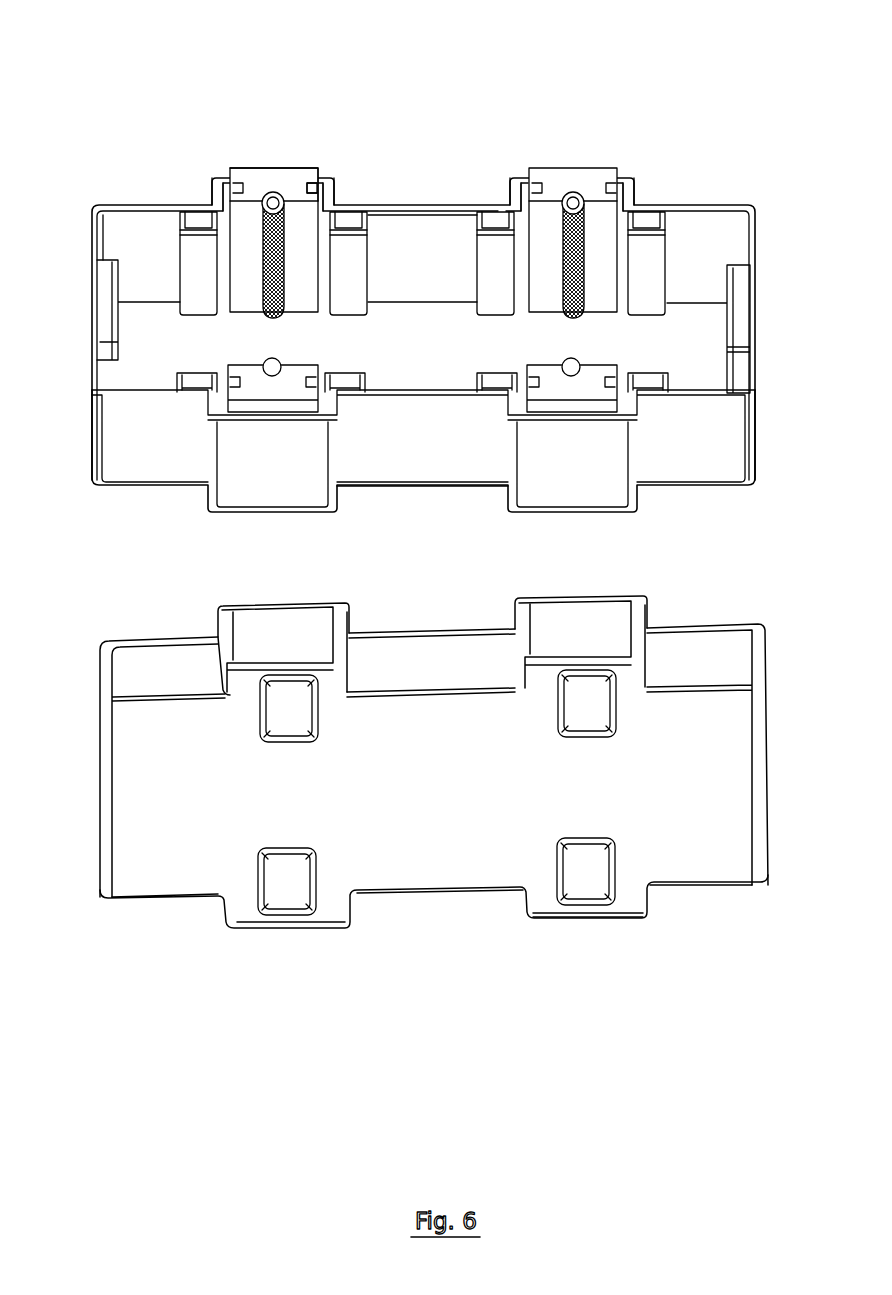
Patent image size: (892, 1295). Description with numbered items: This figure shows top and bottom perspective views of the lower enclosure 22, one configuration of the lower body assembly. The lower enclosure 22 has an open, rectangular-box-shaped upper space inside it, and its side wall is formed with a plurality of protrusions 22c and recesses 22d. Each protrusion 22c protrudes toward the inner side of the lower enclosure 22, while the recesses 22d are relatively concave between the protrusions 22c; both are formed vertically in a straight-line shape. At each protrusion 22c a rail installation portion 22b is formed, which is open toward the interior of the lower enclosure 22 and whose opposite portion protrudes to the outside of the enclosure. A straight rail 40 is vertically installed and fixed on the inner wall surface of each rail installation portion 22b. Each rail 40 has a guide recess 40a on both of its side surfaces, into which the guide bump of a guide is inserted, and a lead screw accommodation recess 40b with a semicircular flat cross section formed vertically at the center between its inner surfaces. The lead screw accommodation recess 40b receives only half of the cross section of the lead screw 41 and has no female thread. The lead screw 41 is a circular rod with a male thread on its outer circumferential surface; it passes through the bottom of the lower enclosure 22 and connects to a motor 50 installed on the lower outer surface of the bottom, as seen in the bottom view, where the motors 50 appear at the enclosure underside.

The lower enclosure 22 is at (758, 375).
The rail installation portion 22b is at (225, 178).
The protrusion 22c is at (352, 212).
The recess 22d is at (422, 207).
The rail 40 is at (262, 188).
The guide recess 40a is at (304, 197).
The lead screw accommodation recess 40b is at (274, 177).
The lead screw 41 is at (262, 218).
The motor 50 is at (587, 698).